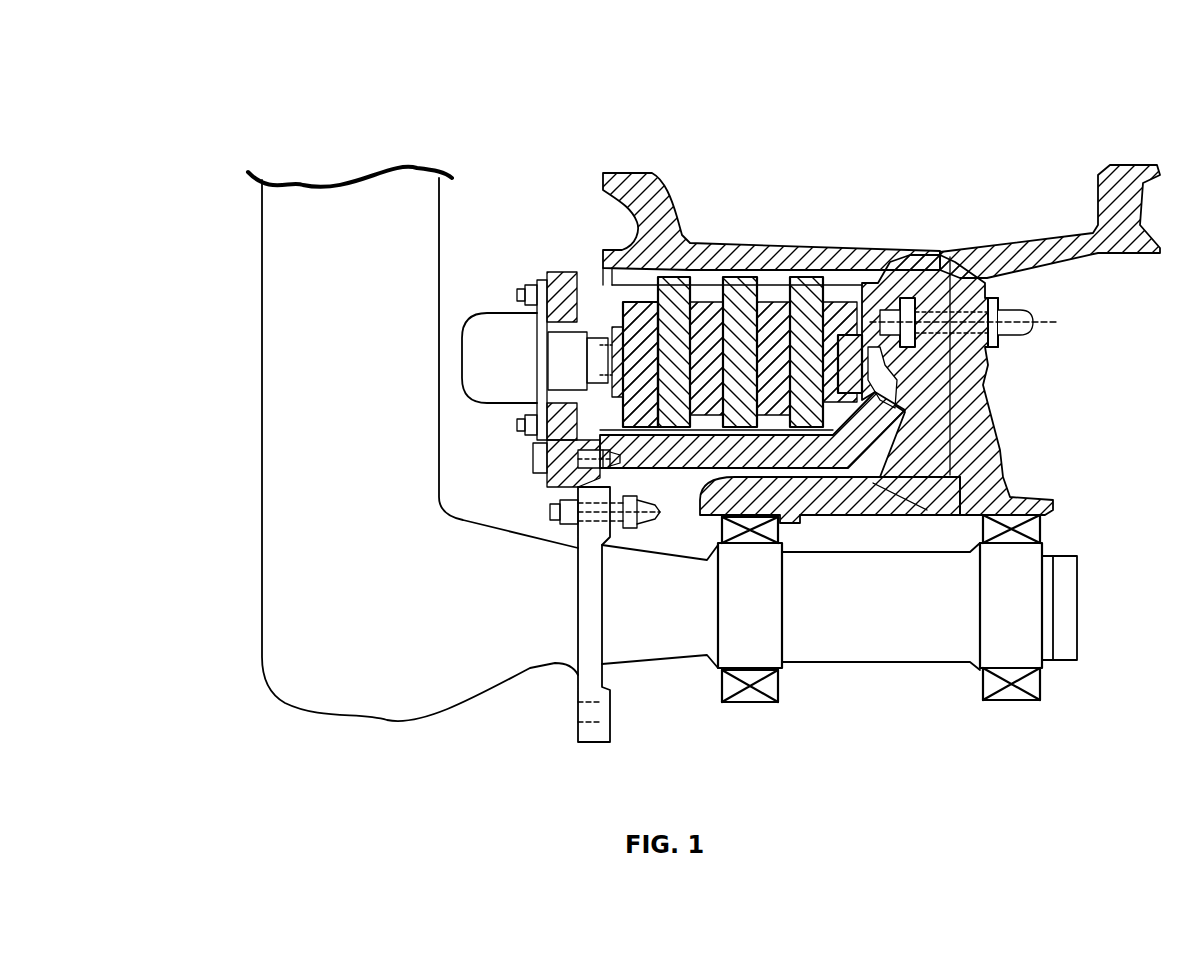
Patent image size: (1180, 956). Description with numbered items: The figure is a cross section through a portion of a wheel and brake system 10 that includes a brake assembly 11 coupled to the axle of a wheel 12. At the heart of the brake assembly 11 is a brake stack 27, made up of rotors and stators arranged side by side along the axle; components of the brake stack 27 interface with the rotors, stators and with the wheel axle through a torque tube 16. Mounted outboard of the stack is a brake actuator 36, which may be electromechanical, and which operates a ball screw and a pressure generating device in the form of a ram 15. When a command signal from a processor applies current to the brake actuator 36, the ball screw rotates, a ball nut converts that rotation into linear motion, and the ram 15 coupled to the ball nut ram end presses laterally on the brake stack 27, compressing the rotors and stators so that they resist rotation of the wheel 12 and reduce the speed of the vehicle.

The wheel and brake system 10 is at (178, 123).
The brake assembly 11 is at (538, 240).
The wheel 12 is at (1010, 477).
The ram 15 is at (617, 323).
The torque tube 16 is at (833, 453).
The brake stack 27 is at (858, 288).
The brake actuator 36 is at (500, 328).